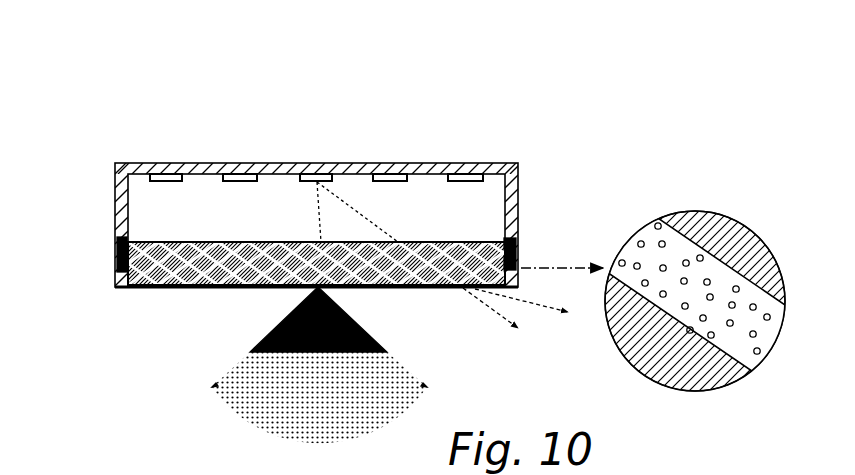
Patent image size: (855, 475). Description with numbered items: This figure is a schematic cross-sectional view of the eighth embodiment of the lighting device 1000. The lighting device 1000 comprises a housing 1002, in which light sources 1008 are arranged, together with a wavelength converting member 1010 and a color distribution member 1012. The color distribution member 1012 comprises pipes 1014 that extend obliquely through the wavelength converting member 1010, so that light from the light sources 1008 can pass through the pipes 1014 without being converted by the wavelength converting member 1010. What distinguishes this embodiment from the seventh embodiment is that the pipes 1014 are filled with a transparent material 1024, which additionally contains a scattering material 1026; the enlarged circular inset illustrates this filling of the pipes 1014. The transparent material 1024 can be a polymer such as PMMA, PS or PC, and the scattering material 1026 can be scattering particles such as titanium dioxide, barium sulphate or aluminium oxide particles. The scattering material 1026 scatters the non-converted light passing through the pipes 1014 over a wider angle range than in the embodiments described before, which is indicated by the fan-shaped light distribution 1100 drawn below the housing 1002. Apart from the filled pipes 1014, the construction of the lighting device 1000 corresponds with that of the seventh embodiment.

The lighting device 1000 is at (303, 107).
The housing 1002 is at (209, 157).
The light sources 1008 is at (154, 181).
The wavelength converting member 1010 is at (115, 275).
The color distribution member 1012 is at (172, 290).
The pipes 1014 is at (183, 242).
The transparent material 1024 is at (677, 252).
The scattering material 1026 is at (700, 257).
The emitted light beam 1100 is at (319, 381).